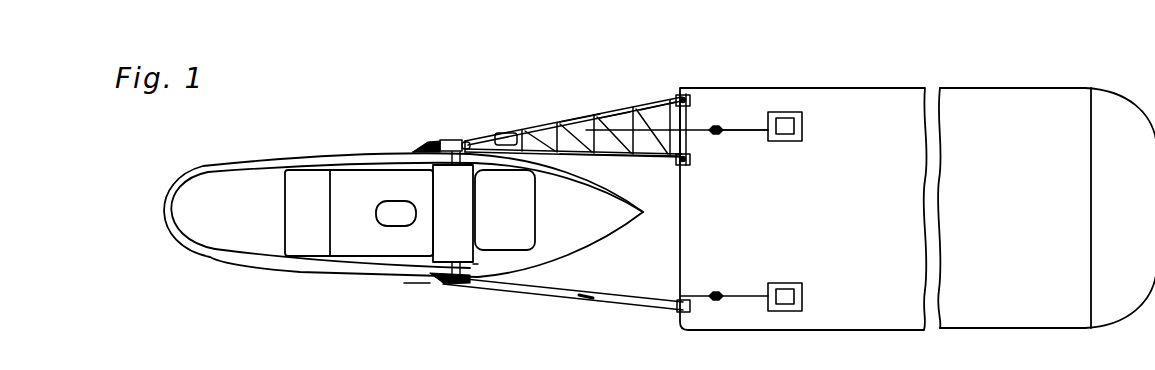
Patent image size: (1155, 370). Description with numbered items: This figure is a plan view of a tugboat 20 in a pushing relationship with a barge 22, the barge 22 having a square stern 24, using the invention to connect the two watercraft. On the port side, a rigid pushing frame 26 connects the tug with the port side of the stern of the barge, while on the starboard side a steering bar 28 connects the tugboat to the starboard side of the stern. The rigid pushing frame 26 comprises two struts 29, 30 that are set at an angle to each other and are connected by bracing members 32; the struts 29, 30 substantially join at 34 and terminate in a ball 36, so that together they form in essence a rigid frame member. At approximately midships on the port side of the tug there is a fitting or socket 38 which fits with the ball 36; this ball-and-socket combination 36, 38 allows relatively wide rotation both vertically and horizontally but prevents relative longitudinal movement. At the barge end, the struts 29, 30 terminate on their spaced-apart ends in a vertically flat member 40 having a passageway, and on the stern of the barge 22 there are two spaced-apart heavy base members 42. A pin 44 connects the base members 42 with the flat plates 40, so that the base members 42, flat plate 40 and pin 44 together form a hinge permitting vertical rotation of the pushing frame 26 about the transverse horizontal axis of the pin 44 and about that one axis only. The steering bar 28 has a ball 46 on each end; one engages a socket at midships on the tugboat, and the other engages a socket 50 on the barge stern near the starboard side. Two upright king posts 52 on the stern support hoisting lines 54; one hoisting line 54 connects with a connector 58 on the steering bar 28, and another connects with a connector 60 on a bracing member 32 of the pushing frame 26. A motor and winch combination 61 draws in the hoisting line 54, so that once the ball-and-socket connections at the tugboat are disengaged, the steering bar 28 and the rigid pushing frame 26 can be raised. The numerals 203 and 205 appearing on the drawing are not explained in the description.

The tugboat 20 is at (216, 165).
The barge 22 is at (865, 86).
The square stern 24 is at (675, 226).
The rigid pushing frame 26 is at (530, 126).
The steering bar 28 is at (549, 284).
The strut 29 is at (628, 118).
The strut 30 is at (658, 160).
The bracing members 32 is at (655, 118).
The strut junction 34 is at (466, 139).
The ball 36 is at (432, 142).
The socket 38 is at (418, 148).
The flat member 40 is at (692, 103).
The base members 42 is at (690, 108).
The pin 44 is at (690, 96).
The ball 46 is at (448, 284).
The socket 50 is at (426, 284).
The king posts 52 is at (722, 128).
The hoisting line 54 is at (754, 131).
The connector 58 is at (586, 300).
The connector 60 is at (590, 118).
The motor and winch combination 61 is at (803, 125).
The pin 203 is at (452, 163).
The receiver 205 is at (478, 166).